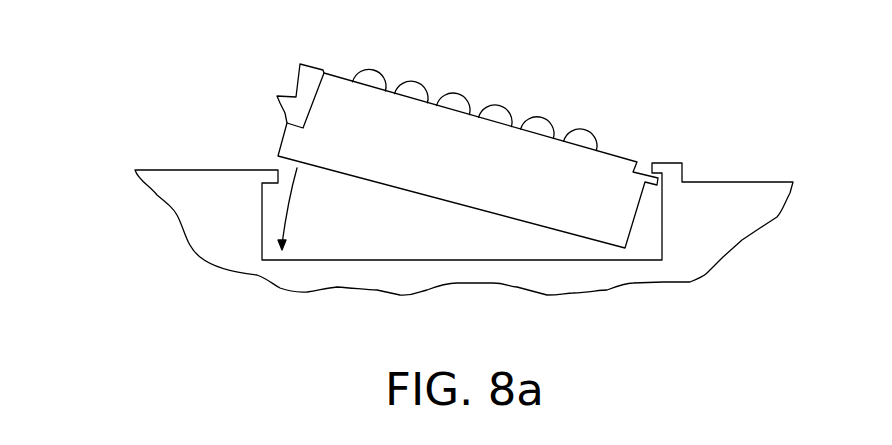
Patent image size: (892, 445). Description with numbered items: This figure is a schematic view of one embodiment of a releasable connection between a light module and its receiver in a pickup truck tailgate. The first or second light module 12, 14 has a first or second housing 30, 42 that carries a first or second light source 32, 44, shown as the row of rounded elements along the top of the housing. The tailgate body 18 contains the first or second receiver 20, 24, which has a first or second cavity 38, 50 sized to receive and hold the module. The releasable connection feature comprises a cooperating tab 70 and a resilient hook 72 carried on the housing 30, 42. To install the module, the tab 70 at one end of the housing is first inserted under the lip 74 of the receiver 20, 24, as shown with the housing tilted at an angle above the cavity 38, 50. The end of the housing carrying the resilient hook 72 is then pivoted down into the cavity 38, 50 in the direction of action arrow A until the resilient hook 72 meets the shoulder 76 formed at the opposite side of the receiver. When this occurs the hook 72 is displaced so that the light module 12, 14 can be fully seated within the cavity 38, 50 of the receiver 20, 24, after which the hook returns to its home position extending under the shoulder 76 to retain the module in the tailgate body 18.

The first light module 12 is at (461, 180).
The second light module 14 is at (609, 99).
The tailgate body 18 is at (710, 231).
The first receiver 20 is at (350, 259).
The second receiver 24 is at (254, 237).
The first housing 30 is at (451, 248).
The second housing 42 is at (473, 190).
The first light source 32 is at (477, 87).
The second light source 44 is at (415, 88).
The cavity 38 is at (261, 188).
The second cavity 50 is at (375, 260).
The tab 70 is at (650, 186).
The resilient hook 72 is at (277, 96).
The lip 74 is at (655, 162).
The shoulder 76 is at (269, 185).
The action arrow A is at (287, 213).